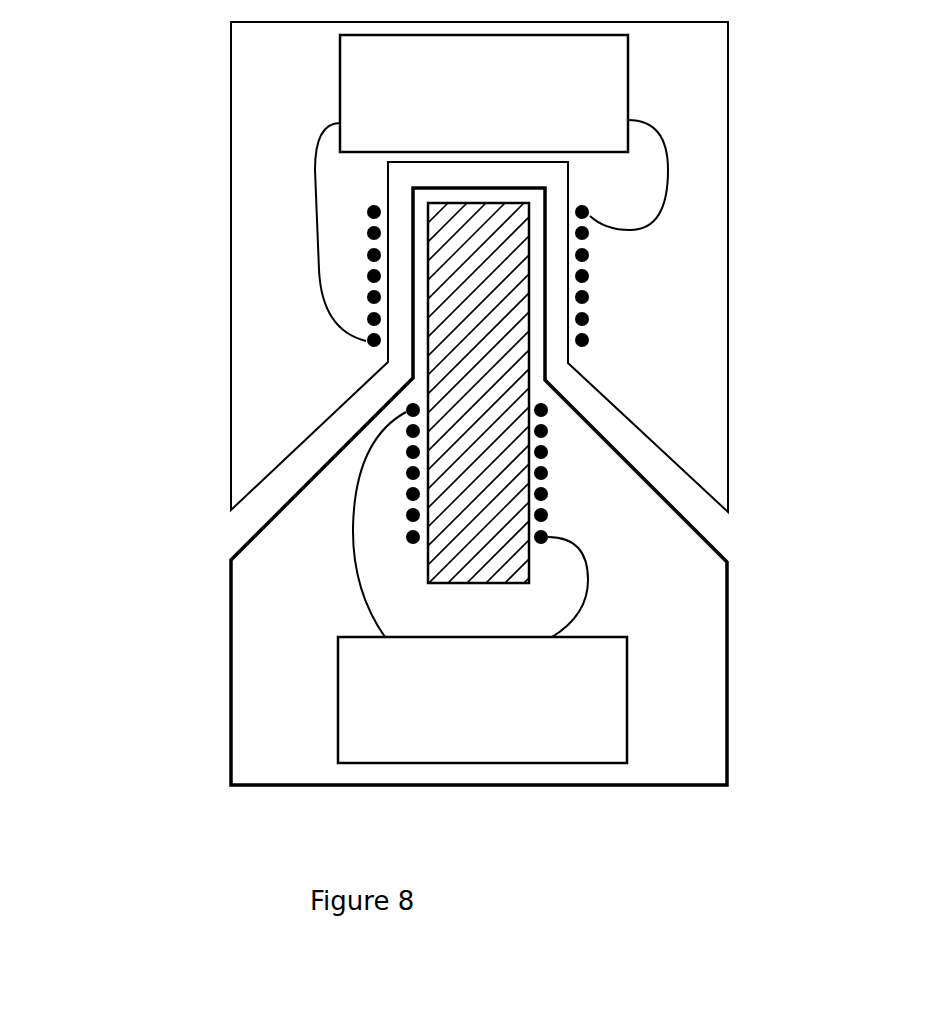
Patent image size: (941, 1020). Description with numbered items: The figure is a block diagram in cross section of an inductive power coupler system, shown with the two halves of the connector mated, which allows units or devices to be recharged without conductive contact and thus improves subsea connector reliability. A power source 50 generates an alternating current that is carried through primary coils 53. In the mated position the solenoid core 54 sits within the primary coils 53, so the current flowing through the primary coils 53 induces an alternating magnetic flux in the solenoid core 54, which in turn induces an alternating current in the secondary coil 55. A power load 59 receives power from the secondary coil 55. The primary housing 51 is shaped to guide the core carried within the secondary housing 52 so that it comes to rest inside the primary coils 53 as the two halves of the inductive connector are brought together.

The power source 50 is at (484, 93).
The primary housing 51 is at (230, 412).
The secondary housing 52 is at (230, 653).
The primary coils 53 is at (588, 277).
The solenoid core 54 is at (480, 384).
The secondary coil 55 is at (548, 497).
The power load 59 is at (482, 700).